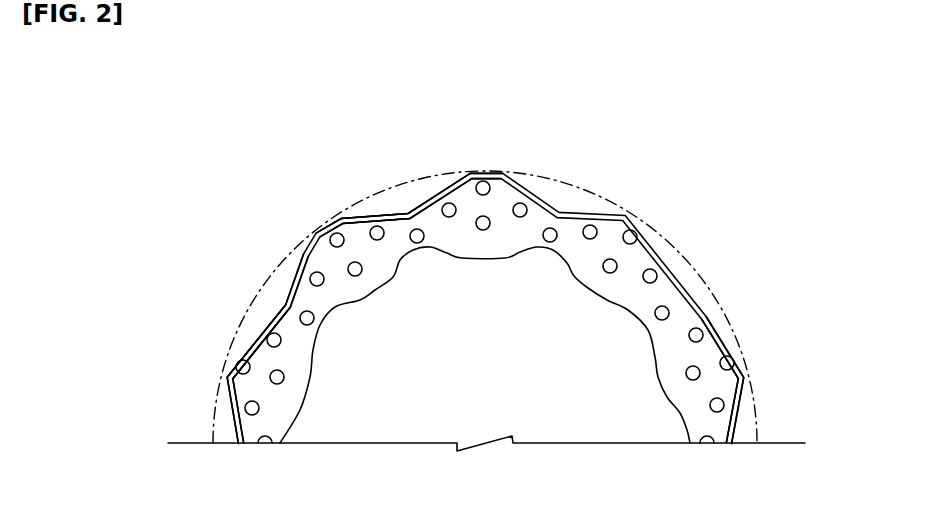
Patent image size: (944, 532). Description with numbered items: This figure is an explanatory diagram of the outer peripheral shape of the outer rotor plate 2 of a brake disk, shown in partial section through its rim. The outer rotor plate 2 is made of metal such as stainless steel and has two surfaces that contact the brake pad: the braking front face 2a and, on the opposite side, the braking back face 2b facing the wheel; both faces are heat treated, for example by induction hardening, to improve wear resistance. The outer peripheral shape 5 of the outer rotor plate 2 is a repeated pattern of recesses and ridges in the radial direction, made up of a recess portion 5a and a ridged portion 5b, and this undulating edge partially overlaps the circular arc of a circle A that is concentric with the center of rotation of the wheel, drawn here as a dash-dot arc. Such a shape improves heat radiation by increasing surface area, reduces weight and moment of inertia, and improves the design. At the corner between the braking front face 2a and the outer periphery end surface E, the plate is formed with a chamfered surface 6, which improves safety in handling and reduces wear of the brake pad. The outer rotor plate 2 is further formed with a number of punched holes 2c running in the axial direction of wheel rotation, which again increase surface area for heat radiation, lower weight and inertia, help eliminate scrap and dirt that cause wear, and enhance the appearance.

The outer rotor plate 2 is at (647, 251).
The braking front face 2a is at (725, 388).
The braking back face 2b is at (411, 213).
The punched holes 2c is at (668, 310).
The outer peripheral shape 5 is at (302, 263).
The recess portion 5a is at (285, 308).
The ridged portion 5b is at (228, 362).
The chamfered surface 6 is at (353, 214).
The outer periphery end surface E is at (487, 165).
The circle A is at (592, 190).